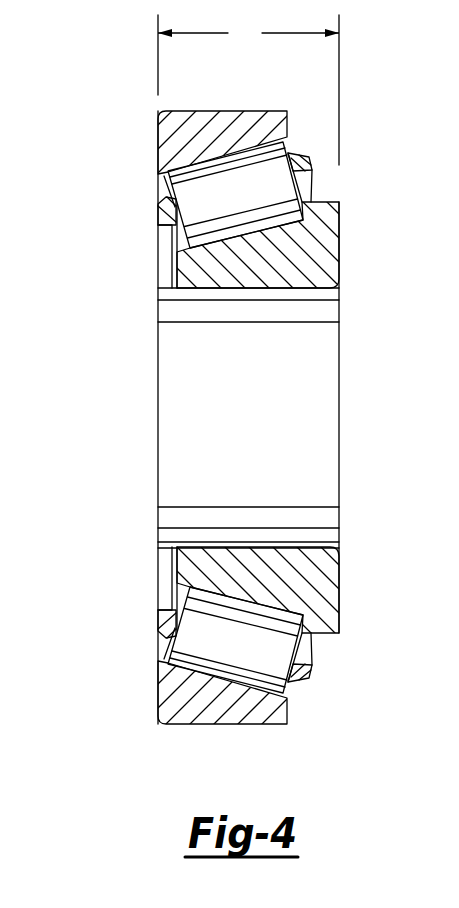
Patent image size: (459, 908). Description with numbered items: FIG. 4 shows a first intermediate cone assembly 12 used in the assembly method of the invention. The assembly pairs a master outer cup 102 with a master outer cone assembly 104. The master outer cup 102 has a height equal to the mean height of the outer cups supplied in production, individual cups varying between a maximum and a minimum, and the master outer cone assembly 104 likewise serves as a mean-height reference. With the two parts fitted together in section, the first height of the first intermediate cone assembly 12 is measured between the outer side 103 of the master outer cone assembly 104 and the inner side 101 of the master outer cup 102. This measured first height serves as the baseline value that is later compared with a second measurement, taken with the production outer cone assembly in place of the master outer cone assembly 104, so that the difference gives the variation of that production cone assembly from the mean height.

The first intermediate cone assembly 12 is at (90, 339).
The inner side of the master outer cup 101 is at (158, 152).
The master outer cup 102 is at (215, 725).
The outer side of the master outer cone assembly 103 is at (339, 247).
The master outer cone assembly 104 is at (313, 648).